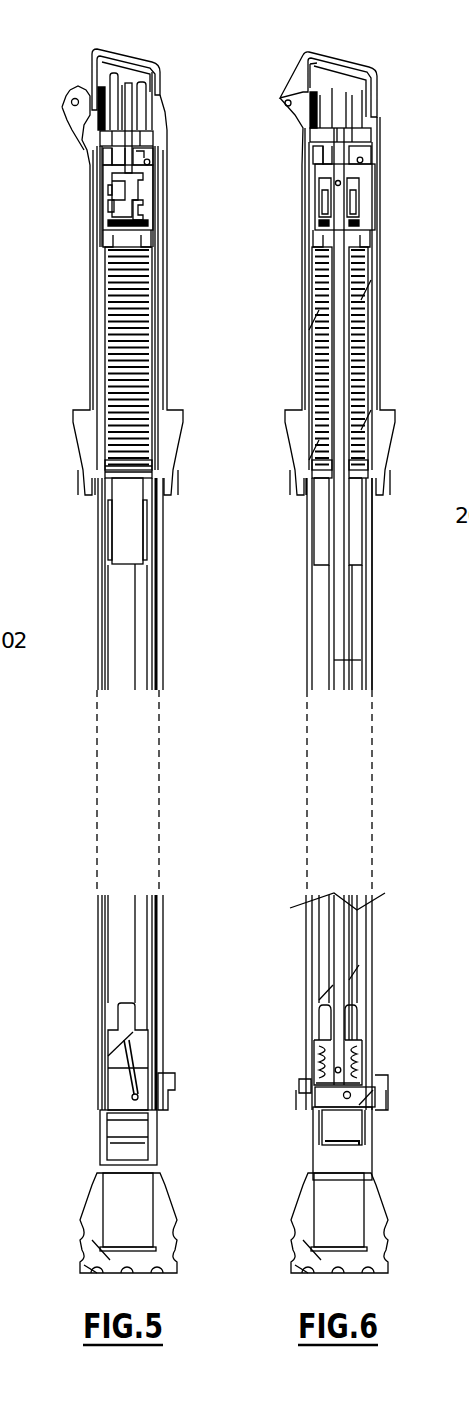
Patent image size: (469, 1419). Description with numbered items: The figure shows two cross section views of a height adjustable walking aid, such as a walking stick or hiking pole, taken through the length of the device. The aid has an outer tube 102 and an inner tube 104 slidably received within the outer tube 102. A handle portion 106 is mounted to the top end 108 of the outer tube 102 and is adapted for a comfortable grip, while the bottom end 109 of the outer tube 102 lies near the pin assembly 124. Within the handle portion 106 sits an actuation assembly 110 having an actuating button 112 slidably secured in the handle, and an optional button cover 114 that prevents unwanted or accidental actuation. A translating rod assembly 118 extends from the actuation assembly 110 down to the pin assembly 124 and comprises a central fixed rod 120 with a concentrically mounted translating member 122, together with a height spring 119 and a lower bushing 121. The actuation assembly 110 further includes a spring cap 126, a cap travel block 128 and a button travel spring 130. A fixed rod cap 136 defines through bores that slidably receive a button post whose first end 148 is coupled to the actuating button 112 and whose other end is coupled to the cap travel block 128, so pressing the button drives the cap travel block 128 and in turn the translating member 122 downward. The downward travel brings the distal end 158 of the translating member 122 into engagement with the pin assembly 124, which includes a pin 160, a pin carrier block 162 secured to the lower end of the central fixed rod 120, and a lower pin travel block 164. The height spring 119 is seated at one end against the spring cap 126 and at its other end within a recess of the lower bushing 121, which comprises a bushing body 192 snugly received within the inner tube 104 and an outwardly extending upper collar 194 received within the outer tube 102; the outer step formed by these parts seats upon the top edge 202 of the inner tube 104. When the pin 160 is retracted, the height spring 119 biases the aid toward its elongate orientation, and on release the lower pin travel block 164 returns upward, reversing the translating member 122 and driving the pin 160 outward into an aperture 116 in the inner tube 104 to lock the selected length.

In FIG. 5, the outer tube 102 is at (164, 548).
In FIG. 6, the outer tube 102 is at (367, 794).
In FIG. 5, the inner tube 104 is at (148, 630).
In FIG. 6, the inner tube 104 is at (290, 784).
In FIG. 5, the handle portion 106 is at (90, 242).
In FIG. 6, the handle portion 106 is at (305, 296).
In FIG. 5, the top end 108 is at (160, 215).
In FIG. 6, the top end 108 is at (381, 306).
In FIG. 5, the bottom end 109 is at (97, 1145).
In FIG. 6, the bottom end 109 is at (367, 1190).
In FIG. 5, the actuation assembly 110 is at (100, 154).
In FIG. 6, the actuation assembly 110 is at (283, 151).
In FIG. 5, the actuating button 112 is at (138, 80).
In FIG. 6, the actuating button 112 is at (371, 93).
In FIG. 5, the button cover 114 is at (120, 62).
In FIG. 6, the button cover 114 is at (336, 65).
In FIG. 6, the aperture 116 is at (339, 606).
In FIG. 6, the translating rod assembly 118 is at (403, 802).
In FIG. 5, the height spring 119 is at (147, 330).
In FIG. 6, the height spring 119 is at (381, 358).
In FIG. 6, the central fixed rod 120 is at (386, 668).
In FIG. 5, the lower bushing 121 is at (148, 486).
In FIG. 6, the lower bushing 121 is at (400, 584).
In FIG. 6, the translating member 122 is at (376, 949).
In FIG. 5, the pin assembly 124 is at (112, 1086).
In FIG. 6, the pin assembly 124 is at (276, 1071).
In FIG. 5, the spring cap 126 is at (152, 232).
In FIG. 5, the cap travel block 128 is at (130, 188).
In FIG. 6, the cap travel block 128 is at (379, 190).
In FIG. 5, the button travel spring 130 is at (115, 212).
In FIG. 6, the button travel spring 130 is at (386, 204).
In FIG. 5, the fixed rod cap 136 is at (153, 160).
In FIG. 6, the fixed rod cap 136 is at (393, 141).
In FIG. 5, the first end 148 is at (132, 128).
In FIG. 6, the distal end 158 is at (376, 1016).
In FIG. 6, the pin 160 is at (384, 1093).
In FIG. 6, the pin carrier block 162 is at (382, 1127).
In FIG. 5, the lower pin travel block 164 is at (162, 1078).
In FIG. 6, the lower pin travel block 164 is at (378, 1062).
In FIG. 5, the bushing body 192 is at (110, 543).
In FIG. 6, the bushing body 192 is at (301, 521).
In FIG. 5, the upper collar 194 is at (152, 470).
In FIG. 6, the upper collar 194 is at (304, 476).
In FIG. 5, the top edge 202 is at (88, 470).
In FIG. 6, the top edge 202 is at (374, 571).